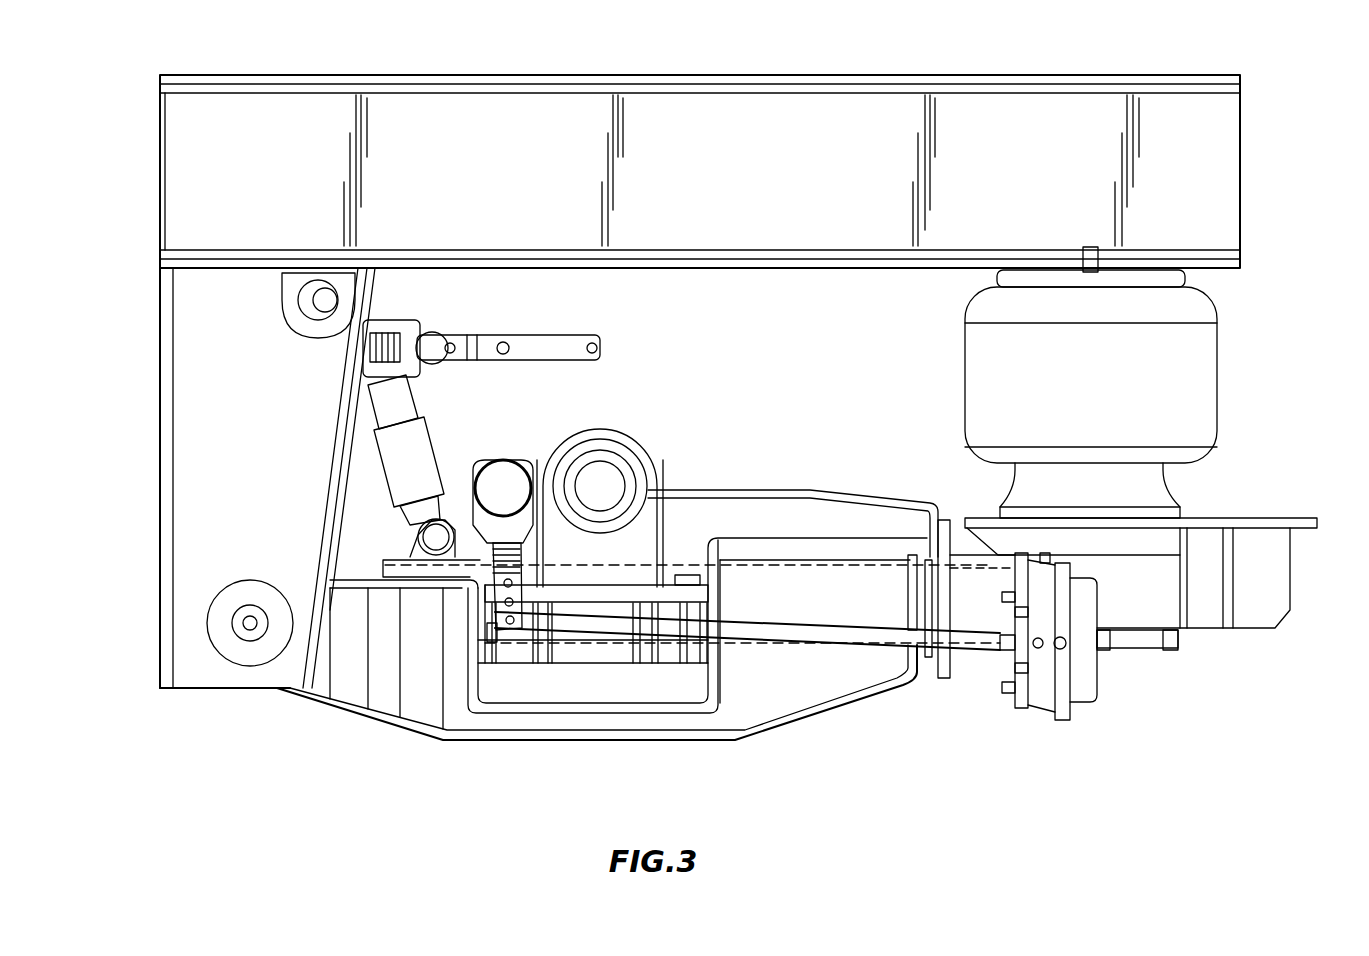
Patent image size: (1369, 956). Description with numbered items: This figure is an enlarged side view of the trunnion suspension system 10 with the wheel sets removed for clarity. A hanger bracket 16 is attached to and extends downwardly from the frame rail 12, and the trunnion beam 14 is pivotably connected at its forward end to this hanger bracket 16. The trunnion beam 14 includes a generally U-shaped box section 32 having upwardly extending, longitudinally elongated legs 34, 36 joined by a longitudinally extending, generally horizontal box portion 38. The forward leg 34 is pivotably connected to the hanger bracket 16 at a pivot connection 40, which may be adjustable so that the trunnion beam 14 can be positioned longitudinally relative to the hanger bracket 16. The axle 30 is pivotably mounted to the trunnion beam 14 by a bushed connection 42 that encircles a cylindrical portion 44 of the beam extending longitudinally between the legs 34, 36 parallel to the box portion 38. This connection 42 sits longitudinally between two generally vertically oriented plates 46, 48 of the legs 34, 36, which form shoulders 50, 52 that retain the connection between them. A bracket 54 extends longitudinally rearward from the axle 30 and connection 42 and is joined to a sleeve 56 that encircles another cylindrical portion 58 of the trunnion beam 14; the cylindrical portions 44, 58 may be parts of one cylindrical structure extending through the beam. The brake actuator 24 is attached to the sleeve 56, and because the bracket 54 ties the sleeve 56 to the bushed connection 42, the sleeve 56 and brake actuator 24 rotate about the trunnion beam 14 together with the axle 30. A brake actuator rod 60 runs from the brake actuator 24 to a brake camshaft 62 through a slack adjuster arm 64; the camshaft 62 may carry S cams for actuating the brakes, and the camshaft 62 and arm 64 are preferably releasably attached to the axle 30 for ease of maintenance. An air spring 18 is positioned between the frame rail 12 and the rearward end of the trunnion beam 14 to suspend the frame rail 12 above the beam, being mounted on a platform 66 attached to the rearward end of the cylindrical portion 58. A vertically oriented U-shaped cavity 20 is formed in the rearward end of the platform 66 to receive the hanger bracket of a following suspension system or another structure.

The suspension system 10 is at (1000, 804).
The frame rail 12 is at (530, 75).
The trunnion beam 14 is at (827, 717).
The hanger bracket 16 is at (193, 690).
The air spring 18 is at (965, 360).
The U-shaped cavity 20 is at (1262, 605).
The brake actuator 24 is at (1097, 700).
The axle 30 is at (633, 457).
The U-shaped box section 32 is at (740, 707).
The forward leg 34 is at (427, 670).
The rearward leg 36 is at (850, 665).
The horizontal box portion 38 is at (598, 720).
The pivot connection 40 is at (250, 645).
The bushed connection 42 is at (623, 665).
The cylindrical portion 44 is at (585, 643).
The vertically oriented plate 46 is at (467, 680).
The vertically oriented plate 48 is at (722, 670).
The shoulder 50 is at (477, 650).
The shoulder 52 is at (700, 653).
The bracket 54 is at (763, 488).
The sleeve 56 is at (978, 658).
The cylindrical portion 58 is at (963, 553).
The brake actuator rod 60 is at (823, 625).
The brake camshaft 62 is at (493, 460).
The slack adjuster arm 64 is at (490, 563).
The platform 66 is at (1207, 518).